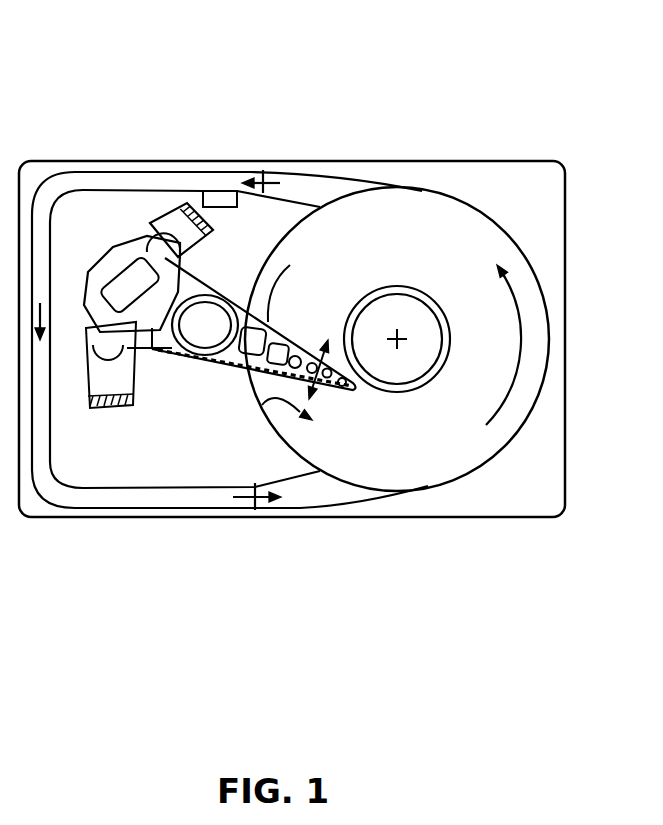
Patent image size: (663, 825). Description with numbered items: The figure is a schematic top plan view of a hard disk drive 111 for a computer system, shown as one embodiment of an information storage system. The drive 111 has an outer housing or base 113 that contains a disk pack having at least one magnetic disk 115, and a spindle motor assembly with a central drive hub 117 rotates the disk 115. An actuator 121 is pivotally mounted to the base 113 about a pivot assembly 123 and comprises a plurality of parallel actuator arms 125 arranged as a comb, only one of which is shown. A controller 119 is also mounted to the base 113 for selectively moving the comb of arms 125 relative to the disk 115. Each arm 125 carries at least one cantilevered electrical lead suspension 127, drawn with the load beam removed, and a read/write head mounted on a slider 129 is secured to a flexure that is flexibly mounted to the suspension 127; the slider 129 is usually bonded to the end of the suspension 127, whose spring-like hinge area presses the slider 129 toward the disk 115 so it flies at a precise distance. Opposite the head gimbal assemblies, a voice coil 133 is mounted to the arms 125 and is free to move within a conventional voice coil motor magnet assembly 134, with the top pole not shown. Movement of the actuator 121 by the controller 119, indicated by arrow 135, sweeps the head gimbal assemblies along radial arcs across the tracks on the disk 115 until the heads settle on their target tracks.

The hard disk drive 111 is at (540, 72).
The base 113 is at (450, 162).
The magnetic disk 115 is at (457, 218).
The central drive hub 117 is at (420, 288).
The controller 119 is at (228, 207).
The actuator 121 is at (144, 422).
The pivot assembly 123 is at (205, 357).
The actuator arm 125 is at (247, 312).
The electrical lead suspension 127 is at (283, 334).
The slider 129 is at (340, 384).
The voice coil 133 is at (103, 248).
The voice coil motor magnet assembly 134 is at (170, 223).
The arrow indicating actuator movement 135 is at (262, 405).